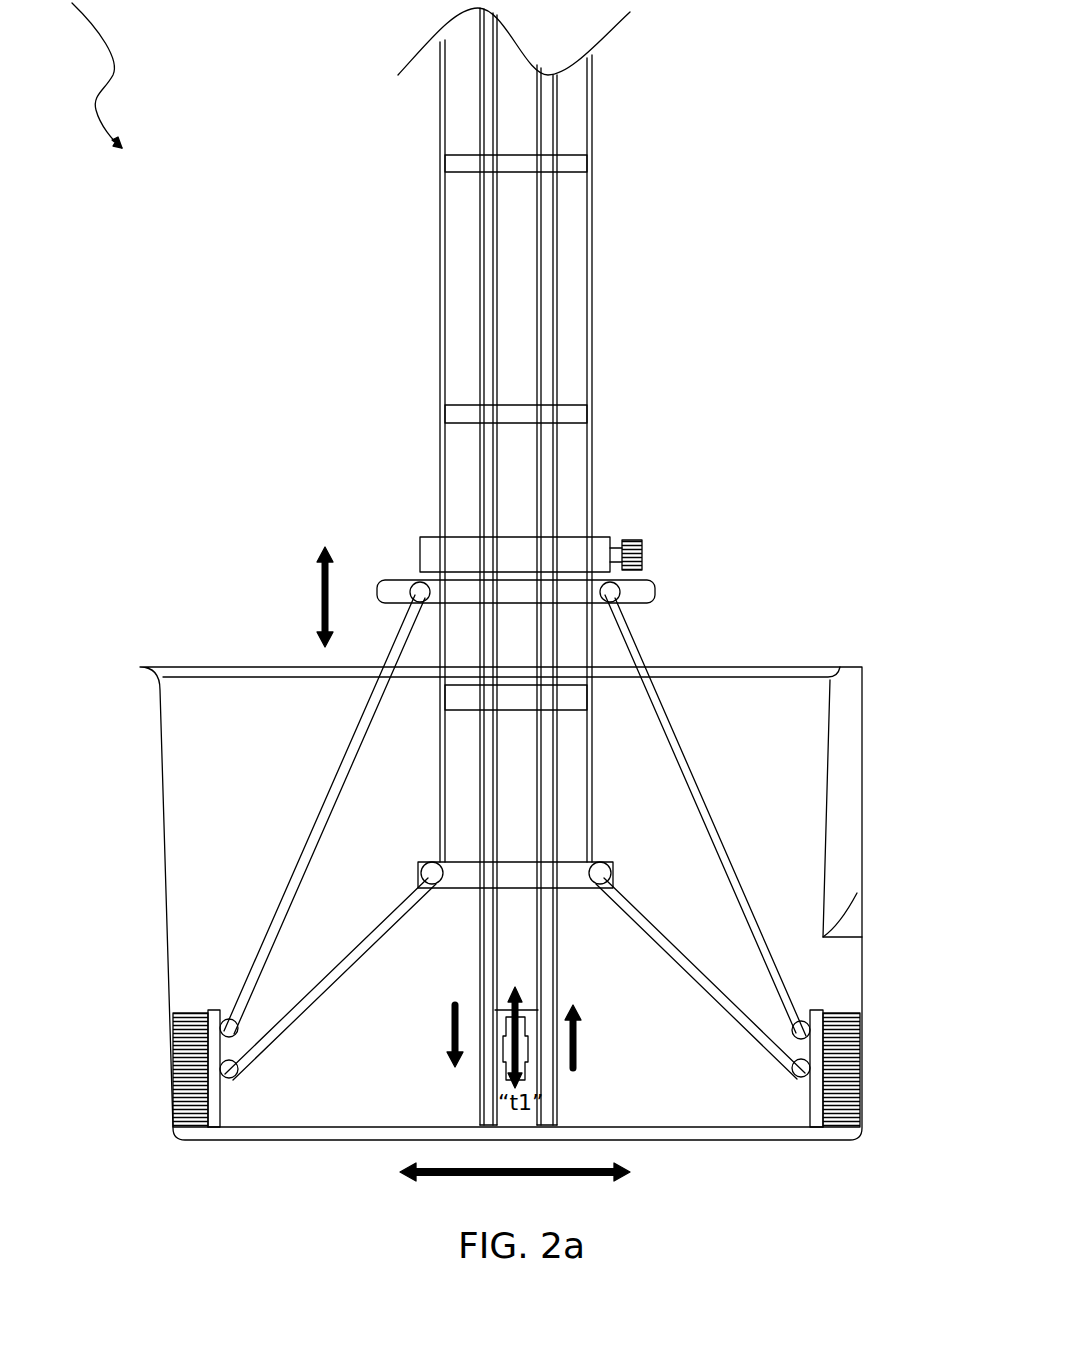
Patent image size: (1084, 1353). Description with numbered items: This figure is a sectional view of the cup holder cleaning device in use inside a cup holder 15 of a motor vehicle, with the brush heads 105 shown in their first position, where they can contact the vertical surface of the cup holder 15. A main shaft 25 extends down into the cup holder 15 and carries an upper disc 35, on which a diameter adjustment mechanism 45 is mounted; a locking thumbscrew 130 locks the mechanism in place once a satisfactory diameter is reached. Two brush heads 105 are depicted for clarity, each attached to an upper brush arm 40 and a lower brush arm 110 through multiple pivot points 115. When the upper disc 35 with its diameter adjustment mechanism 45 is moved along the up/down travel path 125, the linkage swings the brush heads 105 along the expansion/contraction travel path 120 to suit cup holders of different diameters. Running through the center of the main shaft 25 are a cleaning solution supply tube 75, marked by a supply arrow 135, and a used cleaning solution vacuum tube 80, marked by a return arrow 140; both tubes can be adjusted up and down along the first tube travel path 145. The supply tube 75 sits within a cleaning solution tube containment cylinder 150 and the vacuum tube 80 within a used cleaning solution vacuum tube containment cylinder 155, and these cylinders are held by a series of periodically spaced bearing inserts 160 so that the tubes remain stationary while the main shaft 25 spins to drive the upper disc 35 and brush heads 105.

The cup holder 15 is at (862, 802).
The main shaft 25 is at (590, 200).
The upper disc 35 is at (388, 590).
The upper brush arm 40 is at (345, 765).
The diameter adjustment mechanism 45 is at (430, 548).
The cleaning solution supply tube 75 is at (487, 1105).
The used cleaning solution vacuum tube 80 is at (547, 1105).
The brush heads 105 is at (188, 1028).
The lower brush arm 110 is at (388, 915).
The pivot points 115 is at (412, 598).
The expansion/contraction travel path "ec" 120 is at (625, 1180).
The up/down travel path "ud" 125 is at (318, 552).
The locking thumbscrew 130 is at (642, 548).
The supply arrow 135 is at (448, 1028).
The return arrow 140 is at (580, 1035).
The first tube travel path "t1" 145 is at (520, 1005).
The cleaning solution tube containment cylinder 150 is at (485, 302).
The used cleaning solution vacuum tube containment cylinder 155 is at (547, 315).
The bearing insert 160 is at (570, 160).